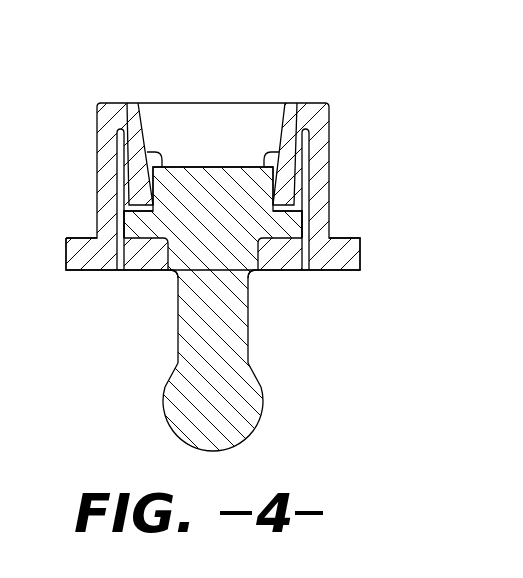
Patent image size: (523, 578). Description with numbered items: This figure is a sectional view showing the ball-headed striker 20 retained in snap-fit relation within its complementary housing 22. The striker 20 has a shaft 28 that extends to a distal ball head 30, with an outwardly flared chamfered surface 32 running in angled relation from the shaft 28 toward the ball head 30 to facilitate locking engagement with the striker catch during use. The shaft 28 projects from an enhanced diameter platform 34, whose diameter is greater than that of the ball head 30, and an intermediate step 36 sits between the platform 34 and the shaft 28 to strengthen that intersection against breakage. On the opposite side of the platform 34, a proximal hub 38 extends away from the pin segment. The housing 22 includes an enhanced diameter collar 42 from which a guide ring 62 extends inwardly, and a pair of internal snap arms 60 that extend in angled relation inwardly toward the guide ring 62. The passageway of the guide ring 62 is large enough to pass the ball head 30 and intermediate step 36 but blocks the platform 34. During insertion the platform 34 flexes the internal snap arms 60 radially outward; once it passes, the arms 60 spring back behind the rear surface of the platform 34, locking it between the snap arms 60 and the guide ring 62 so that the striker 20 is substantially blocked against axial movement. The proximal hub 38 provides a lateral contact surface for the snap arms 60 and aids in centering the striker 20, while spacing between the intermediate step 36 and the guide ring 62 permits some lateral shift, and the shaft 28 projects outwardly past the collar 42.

The striker 20 is at (177, 332).
The housing 22 is at (334, 129).
The shaft 28 is at (176, 302).
The ball head 30 is at (257, 424).
The chamfered surface 32 is at (256, 370).
The enhanced diameter platform 34 is at (305, 224).
The intermediate step 36 is at (259, 273).
The proximal hub 38 is at (196, 167).
The enhanced diameter collar 42 is at (361, 257).
The internal snap arms 60 is at (148, 132).
The guide ring 62 is at (147, 266).